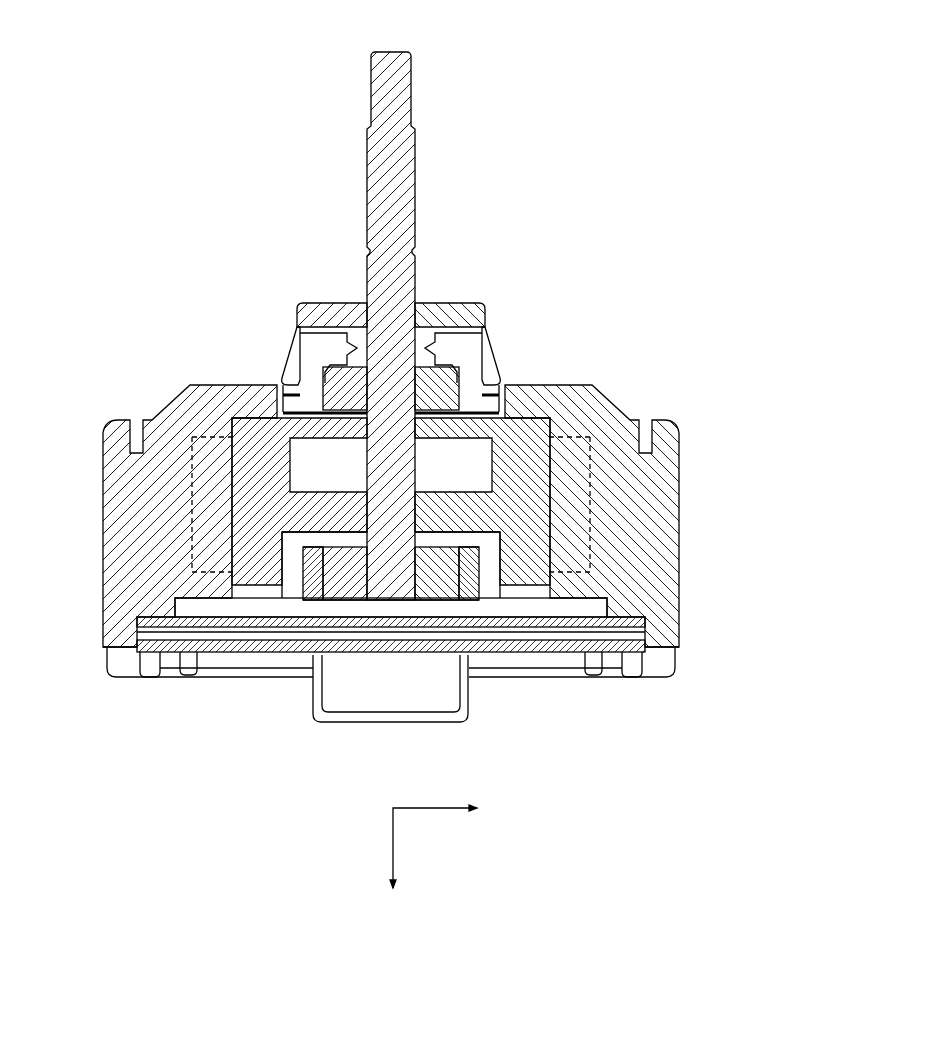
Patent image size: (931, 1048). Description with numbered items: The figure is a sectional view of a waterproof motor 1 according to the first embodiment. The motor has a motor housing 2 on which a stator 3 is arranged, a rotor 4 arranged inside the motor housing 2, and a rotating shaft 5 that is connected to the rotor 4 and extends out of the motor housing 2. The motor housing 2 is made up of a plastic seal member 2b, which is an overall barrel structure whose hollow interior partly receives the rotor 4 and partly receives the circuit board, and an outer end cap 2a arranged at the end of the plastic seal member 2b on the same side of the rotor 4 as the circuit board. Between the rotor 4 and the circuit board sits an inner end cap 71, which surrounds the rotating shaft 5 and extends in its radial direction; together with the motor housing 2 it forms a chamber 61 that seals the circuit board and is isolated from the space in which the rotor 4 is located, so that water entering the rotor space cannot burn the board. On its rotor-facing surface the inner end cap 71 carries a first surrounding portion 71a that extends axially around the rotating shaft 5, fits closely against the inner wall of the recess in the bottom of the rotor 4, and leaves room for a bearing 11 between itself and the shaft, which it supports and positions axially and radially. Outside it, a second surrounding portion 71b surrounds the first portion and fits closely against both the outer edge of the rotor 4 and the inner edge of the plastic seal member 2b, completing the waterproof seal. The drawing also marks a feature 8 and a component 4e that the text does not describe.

The waterproof motor 1 is at (205, 238).
The motor housing 2 is at (445, 577).
The outer end cap 2a is at (660, 583).
The plastic seal member 2b is at (652, 680).
The stator 3 is at (235, 530).
The rotor 4 is at (263, 502).
The coil 4e is at (295, 572).
The rotating shaft 5 is at (395, 98).
The gap 8 is at (107, 667).
The bearing 11 is at (334, 588).
The chamber 61 is at (205, 605).
The inner end cap 71 is at (482, 545).
The first surrounding portion 71a is at (477, 555).
The second surrounding portion 71b is at (473, 573).